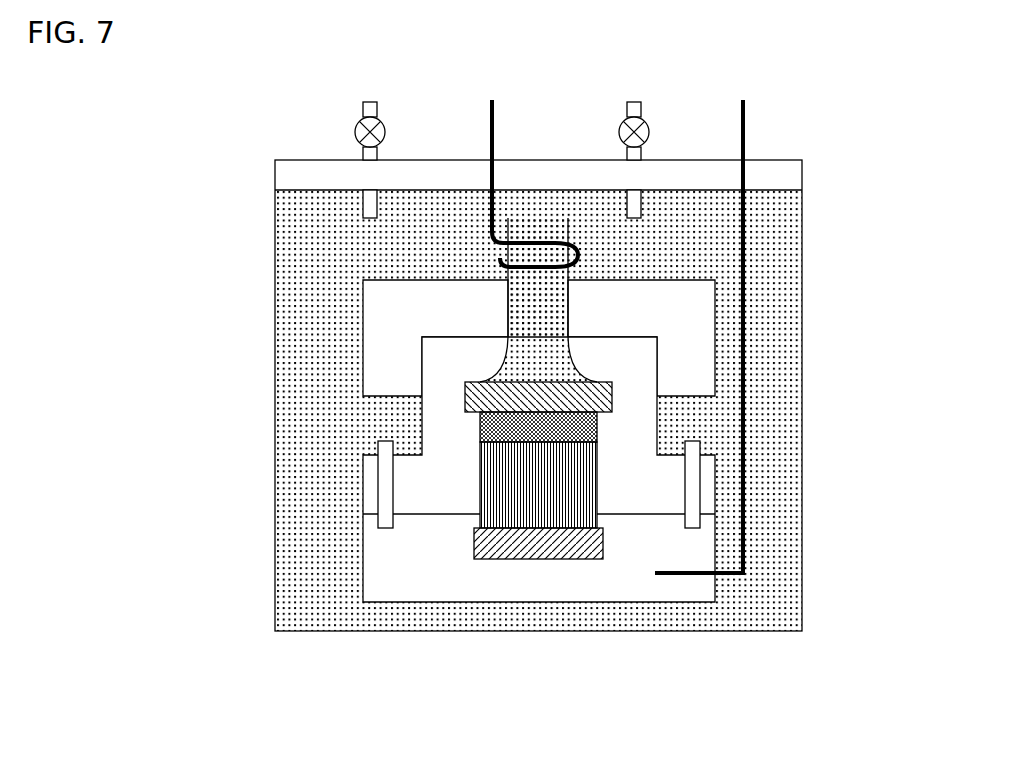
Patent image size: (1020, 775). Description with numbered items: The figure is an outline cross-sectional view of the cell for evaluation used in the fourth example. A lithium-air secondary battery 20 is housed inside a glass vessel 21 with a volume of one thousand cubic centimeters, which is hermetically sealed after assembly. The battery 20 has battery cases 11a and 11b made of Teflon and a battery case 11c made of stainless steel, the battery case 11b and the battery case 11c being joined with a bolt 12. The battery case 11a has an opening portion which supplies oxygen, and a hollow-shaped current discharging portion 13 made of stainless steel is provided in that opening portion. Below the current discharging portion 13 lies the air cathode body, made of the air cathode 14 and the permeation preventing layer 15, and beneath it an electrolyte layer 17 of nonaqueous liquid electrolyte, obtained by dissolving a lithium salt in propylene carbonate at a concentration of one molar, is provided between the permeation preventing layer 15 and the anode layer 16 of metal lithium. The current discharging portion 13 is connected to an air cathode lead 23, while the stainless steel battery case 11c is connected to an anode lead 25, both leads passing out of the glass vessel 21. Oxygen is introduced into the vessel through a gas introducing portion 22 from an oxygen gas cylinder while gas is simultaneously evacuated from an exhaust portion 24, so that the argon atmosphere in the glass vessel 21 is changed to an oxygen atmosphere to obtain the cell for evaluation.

The lithium-air secondary battery 20 is at (419, 410).
The glass vessel 21 is at (792, 229).
The gas introducing portion 22 is at (369, 102).
The air cathode lead 23 is at (492, 100).
The exhaust portion 24 is at (633, 102).
The anode lead 25 is at (743, 100).
The current discharging portion 13 is at (507, 287).
The battery case 11a is at (385, 307).
The battery case 11b is at (437, 352).
The battery case 11c is at (387, 573).
The air cathode 14 is at (485, 398).
The permeation preventing layer 15 is at (485, 427).
The electrolyte layer 17 is at (485, 479).
The bolt 12 is at (453, 484).
The anode layer 16 is at (487, 548).